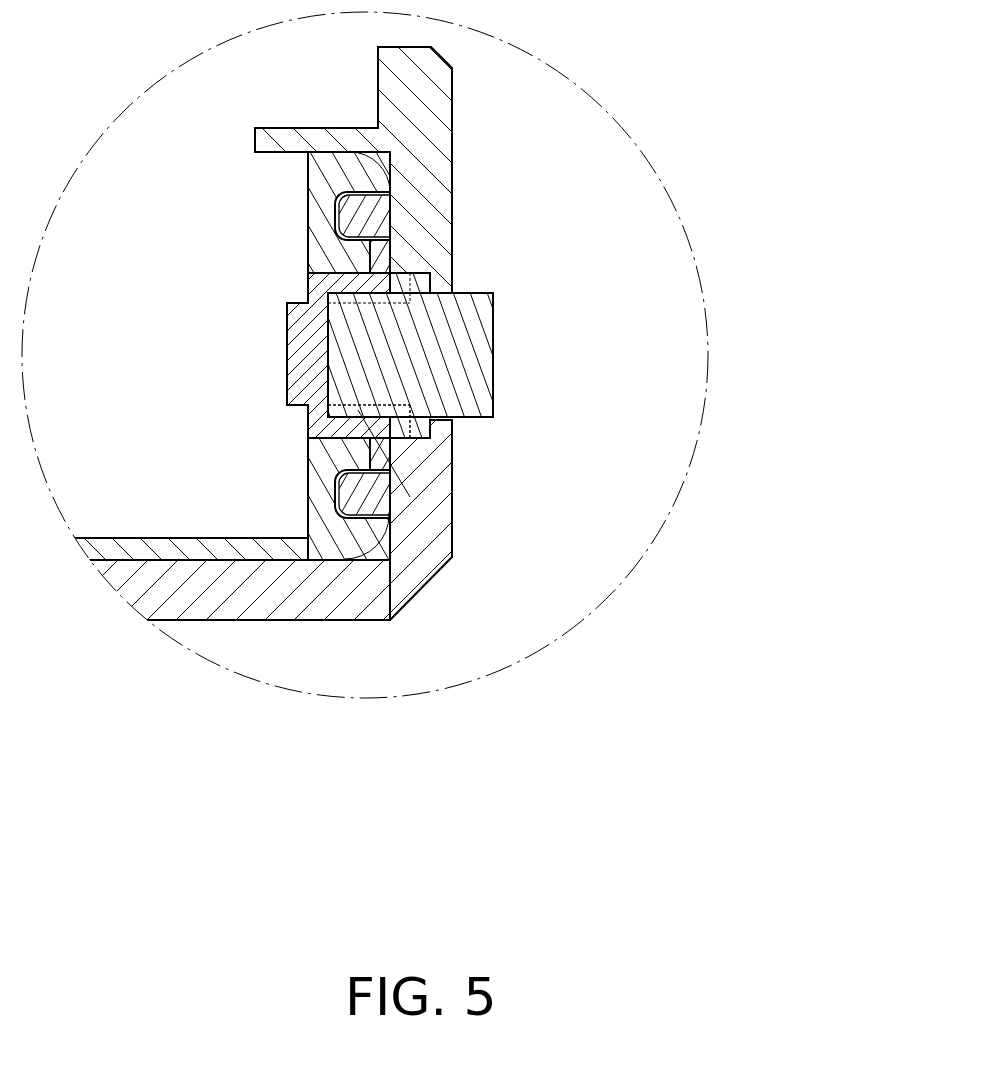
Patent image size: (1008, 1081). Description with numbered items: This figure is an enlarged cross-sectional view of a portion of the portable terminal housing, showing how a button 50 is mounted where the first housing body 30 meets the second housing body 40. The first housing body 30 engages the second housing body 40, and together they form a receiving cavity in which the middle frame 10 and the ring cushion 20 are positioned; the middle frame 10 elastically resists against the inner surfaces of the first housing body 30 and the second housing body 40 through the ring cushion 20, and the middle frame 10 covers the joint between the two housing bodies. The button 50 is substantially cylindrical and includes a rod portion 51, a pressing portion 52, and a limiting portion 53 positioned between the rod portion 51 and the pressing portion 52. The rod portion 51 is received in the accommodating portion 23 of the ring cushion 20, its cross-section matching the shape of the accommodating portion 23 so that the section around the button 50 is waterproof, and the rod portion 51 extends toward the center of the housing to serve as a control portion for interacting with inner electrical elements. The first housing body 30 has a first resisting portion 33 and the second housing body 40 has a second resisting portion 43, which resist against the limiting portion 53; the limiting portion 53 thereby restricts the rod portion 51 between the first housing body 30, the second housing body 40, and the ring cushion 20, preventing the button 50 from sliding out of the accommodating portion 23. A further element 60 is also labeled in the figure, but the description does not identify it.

The middle frame 10 is at (338, 533).
The ring cushion 20 is at (367, 220).
The accommodating portion 23 is at (410, 420).
The first housing body 30 is at (440, 137).
The first resisting portion 33 is at (445, 288).
The second housing body 40 is at (226, 598).
The second resisting portion 43 is at (440, 432).
The button 50 is at (577, 293).
The rod portion 51 is at (347, 360).
The pressing portion 52 is at (487, 382).
The limiting portion 53 is at (417, 286).
The resilient pad 60 is at (428, 427).